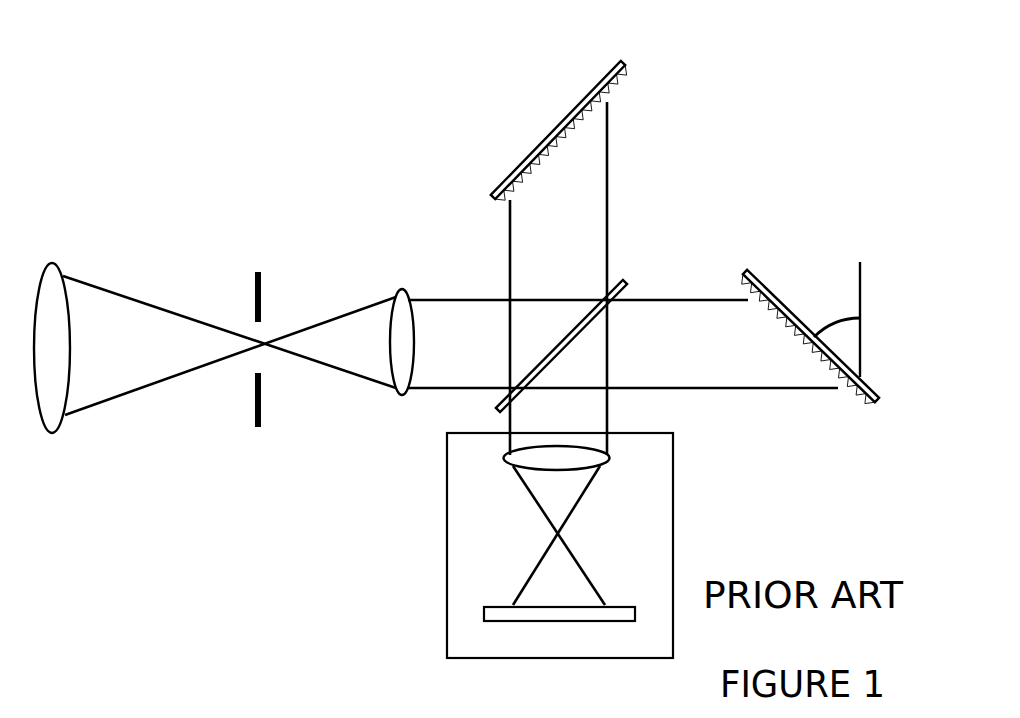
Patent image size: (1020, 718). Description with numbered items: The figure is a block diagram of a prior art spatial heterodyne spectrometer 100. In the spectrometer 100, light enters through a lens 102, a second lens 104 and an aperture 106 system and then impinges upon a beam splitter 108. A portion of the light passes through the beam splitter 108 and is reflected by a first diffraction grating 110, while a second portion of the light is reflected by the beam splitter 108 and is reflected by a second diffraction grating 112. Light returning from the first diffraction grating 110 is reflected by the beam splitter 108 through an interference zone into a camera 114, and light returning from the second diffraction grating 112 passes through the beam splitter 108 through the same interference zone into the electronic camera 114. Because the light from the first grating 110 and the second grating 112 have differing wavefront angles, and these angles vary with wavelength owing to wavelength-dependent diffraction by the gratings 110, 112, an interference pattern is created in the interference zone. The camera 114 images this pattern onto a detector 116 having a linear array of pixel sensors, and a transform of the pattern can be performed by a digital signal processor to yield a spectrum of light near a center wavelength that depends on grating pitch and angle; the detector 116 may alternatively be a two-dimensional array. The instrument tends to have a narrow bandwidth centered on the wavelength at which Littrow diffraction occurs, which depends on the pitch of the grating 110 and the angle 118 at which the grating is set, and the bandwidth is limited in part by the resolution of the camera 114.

The spatial heterodyne spectrometer 100 is at (784, 72).
The lens 102 is at (52, 282).
The lens 104 is at (400, 302).
The aperture 106 is at (256, 341).
The beam splitter 108 is at (618, 290).
The first diffraction grating 110 is at (765, 293).
The second diffraction grating 112 is at (511, 168).
The camera 114 is at (662, 488).
The detector 116 is at (493, 606).
The angle 118 is at (850, 355).